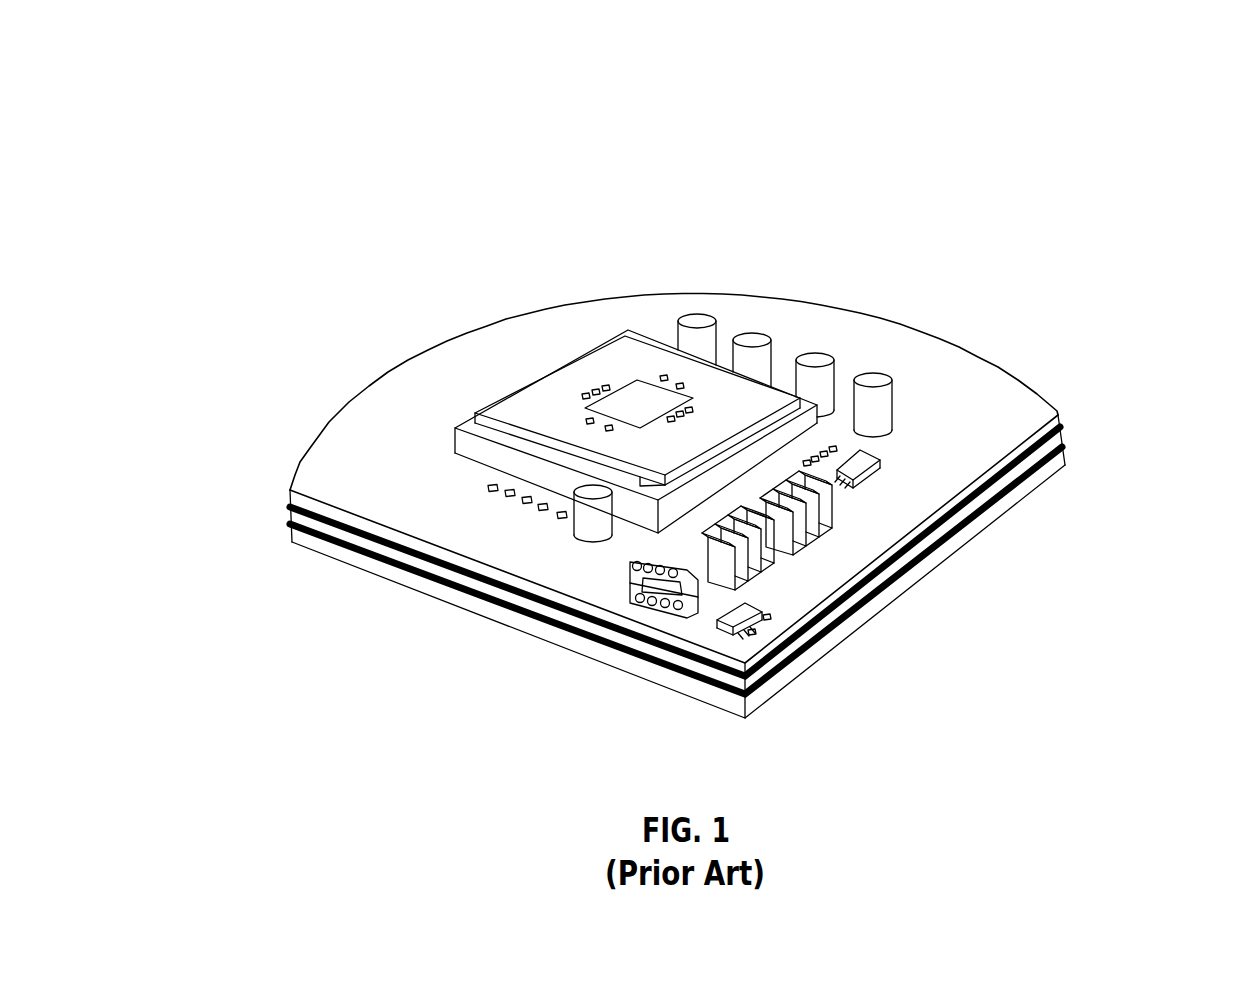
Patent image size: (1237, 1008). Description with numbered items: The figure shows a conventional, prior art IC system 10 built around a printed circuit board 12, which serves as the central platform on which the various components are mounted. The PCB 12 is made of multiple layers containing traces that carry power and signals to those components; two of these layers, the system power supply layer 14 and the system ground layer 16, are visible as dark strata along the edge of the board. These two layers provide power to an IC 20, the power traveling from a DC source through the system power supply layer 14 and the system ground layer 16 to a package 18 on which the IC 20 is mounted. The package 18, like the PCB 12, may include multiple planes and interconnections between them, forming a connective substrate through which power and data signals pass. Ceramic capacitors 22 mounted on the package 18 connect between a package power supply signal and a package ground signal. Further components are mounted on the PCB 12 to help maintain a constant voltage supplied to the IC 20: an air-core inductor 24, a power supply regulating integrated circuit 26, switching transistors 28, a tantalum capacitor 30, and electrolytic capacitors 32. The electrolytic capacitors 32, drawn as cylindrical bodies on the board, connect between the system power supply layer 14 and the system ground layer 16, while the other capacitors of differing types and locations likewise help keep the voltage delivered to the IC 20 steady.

The IC system 10 is at (1070, 172).
The printed circuit board 12 is at (372, 447).
The system power supply layer 14 is at (1058, 417).
The system ground layer 16 is at (1062, 445).
The package 18 is at (543, 405).
The IC 20 is at (590, 355).
The ceramic capacitors 22 is at (543, 405).
The air-core inductor 24 is at (628, 578).
The power supply regulating integrated circuit 26 is at (758, 618).
The switching transistors 28 is at (800, 547).
The tantalum capacitor 30 is at (872, 470).
The electrolytic capacitors 32 is at (860, 373).